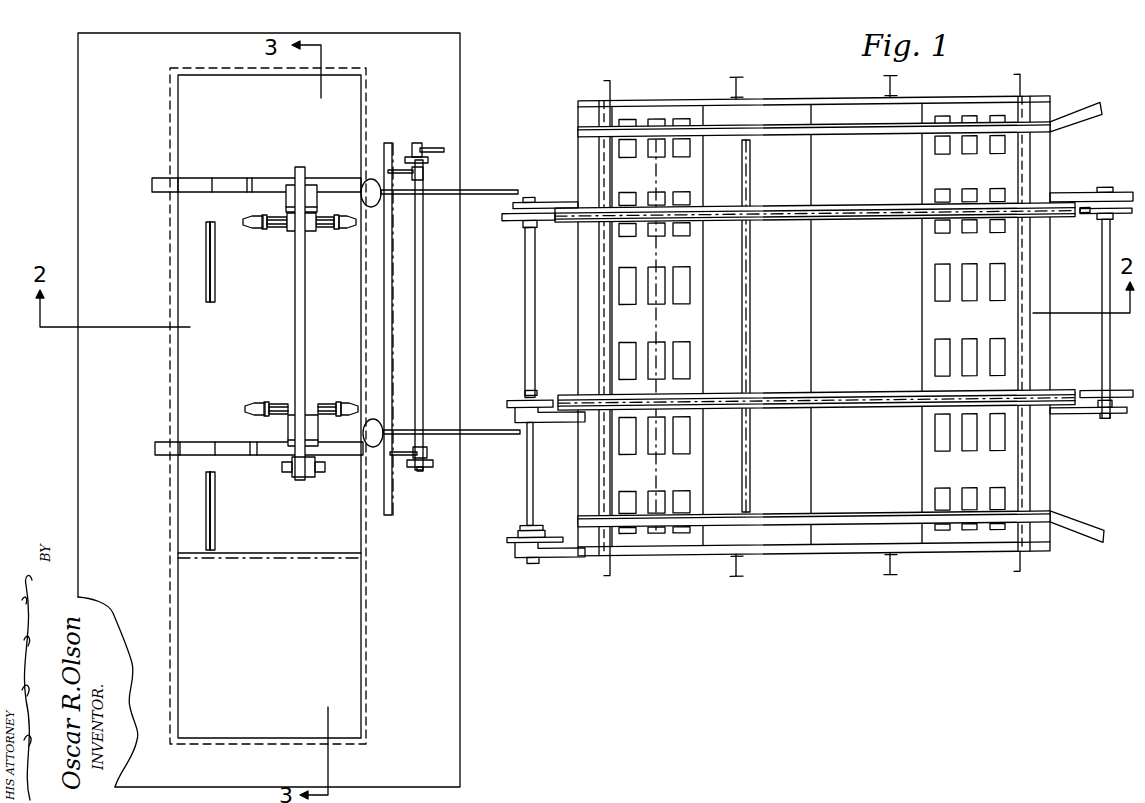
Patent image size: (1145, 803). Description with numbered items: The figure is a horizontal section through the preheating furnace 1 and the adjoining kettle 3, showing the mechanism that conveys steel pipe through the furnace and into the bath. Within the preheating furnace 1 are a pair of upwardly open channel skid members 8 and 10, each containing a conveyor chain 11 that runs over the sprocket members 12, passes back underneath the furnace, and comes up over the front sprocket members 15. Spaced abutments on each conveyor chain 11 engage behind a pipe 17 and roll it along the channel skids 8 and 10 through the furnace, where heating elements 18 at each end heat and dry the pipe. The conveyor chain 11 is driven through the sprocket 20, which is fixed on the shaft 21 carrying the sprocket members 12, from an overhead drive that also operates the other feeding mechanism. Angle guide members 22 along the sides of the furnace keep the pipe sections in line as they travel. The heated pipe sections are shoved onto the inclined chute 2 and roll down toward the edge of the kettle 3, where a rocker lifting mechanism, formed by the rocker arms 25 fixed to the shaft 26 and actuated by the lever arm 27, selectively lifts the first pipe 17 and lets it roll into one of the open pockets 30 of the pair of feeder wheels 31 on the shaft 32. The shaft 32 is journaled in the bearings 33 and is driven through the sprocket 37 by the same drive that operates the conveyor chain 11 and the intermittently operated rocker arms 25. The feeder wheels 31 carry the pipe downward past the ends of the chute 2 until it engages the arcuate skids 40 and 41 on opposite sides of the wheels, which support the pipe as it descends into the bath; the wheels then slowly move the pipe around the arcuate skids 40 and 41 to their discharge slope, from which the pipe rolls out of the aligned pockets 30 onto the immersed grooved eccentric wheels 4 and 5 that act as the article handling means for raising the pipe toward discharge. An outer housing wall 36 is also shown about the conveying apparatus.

The preheating furnace 1 is at (937, 98).
The chute 2 is at (478, 188).
The kettle 3 is at (352, 87).
The eccentric conveyor wheel 4 is at (216, 279).
The eccentric conveyor wheel 5 is at (218, 522).
The channel skid member 8 is at (873, 222).
The channel skid member 10 is at (870, 392).
The conveyor chain 11 is at (828, 222).
The sprocket member 12 is at (543, 222).
The front sprocket member 15 is at (1088, 214).
The pipe 17 is at (392, 329).
The heating element 18 is at (705, 298).
The sprocket 20 is at (555, 535).
The shaft 21 is at (538, 489).
The angle guide member 22 is at (842, 136).
The rocker arm 25 is at (393, 168).
The shaft 26 is at (423, 281).
The lever arm 27 is at (428, 147).
The open pocket 30 is at (257, 228).
The feeder wheel 31 is at (283, 229).
The shaft 32 is at (309, 341).
The bearing 33 is at (317, 201).
The outer housing 36 is at (85, 373).
The sprocket 37 is at (323, 471).
The arcuate skid 40 is at (273, 453).
The arcuate skid 41 is at (257, 177).